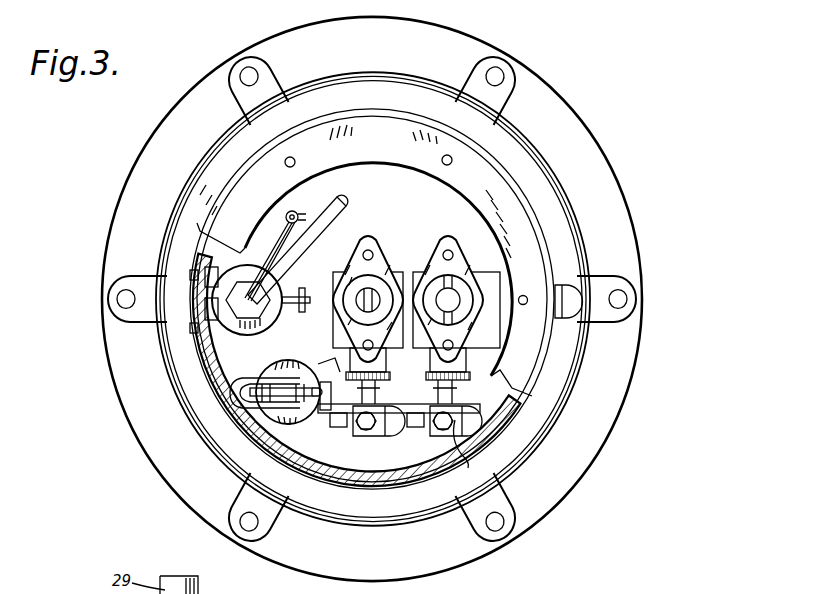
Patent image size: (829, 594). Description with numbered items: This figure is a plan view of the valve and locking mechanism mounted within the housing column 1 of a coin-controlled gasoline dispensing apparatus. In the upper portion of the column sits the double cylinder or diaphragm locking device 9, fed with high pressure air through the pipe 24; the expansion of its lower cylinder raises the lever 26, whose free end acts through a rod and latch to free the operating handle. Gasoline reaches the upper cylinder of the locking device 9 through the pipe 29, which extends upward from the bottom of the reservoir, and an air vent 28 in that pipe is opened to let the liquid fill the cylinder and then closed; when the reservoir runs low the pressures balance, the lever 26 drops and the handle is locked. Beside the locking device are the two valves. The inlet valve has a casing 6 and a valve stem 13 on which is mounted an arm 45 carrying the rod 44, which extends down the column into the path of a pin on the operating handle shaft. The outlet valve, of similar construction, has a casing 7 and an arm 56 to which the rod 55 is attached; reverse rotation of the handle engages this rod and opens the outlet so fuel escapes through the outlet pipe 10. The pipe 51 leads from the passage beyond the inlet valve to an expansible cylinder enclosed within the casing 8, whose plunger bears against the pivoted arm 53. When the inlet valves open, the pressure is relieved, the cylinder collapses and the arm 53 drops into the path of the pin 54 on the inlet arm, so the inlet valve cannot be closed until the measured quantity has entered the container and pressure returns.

The housing column 1 is at (578, 205).
The valve casing 6 is at (373, 248).
The valve casing 7 is at (451, 248).
The casing 8 is at (276, 366).
The locking device 9 is at (272, 317).
The outlet pipe 10 is at (560, 318).
The valve stem 13 is at (440, 392).
The pipe 24 is at (350, 207).
The lever 26 is at (303, 292).
The air vent 28 is at (297, 212).
The pipe 29 is at (272, 243).
The rod 44 is at (340, 428).
The arm 45 is at (370, 438).
The pipe 51 is at (334, 360).
The pivoted arm 53 is at (302, 414).
The pin 54 is at (331, 396).
The rod 55 is at (412, 428).
The arm 56 is at (468, 451).